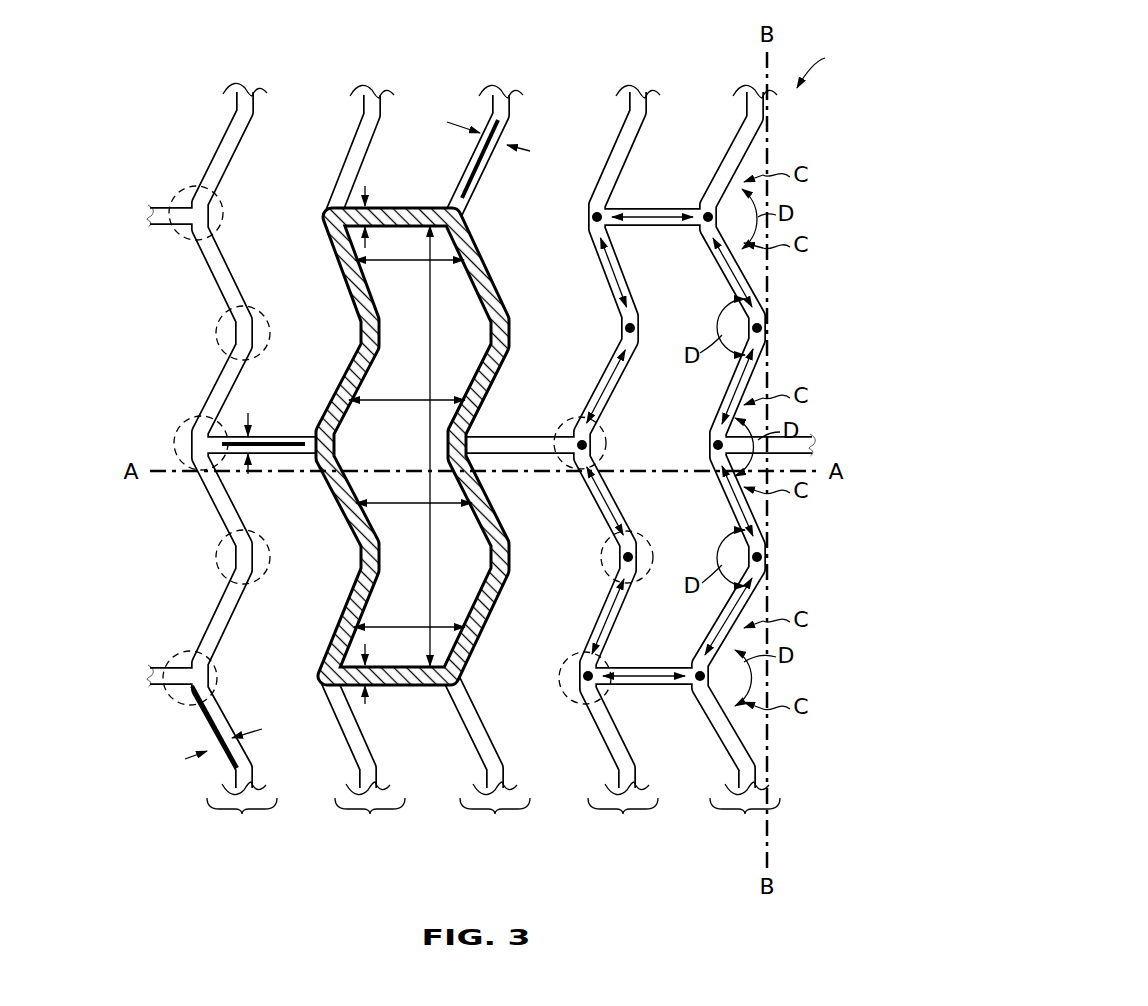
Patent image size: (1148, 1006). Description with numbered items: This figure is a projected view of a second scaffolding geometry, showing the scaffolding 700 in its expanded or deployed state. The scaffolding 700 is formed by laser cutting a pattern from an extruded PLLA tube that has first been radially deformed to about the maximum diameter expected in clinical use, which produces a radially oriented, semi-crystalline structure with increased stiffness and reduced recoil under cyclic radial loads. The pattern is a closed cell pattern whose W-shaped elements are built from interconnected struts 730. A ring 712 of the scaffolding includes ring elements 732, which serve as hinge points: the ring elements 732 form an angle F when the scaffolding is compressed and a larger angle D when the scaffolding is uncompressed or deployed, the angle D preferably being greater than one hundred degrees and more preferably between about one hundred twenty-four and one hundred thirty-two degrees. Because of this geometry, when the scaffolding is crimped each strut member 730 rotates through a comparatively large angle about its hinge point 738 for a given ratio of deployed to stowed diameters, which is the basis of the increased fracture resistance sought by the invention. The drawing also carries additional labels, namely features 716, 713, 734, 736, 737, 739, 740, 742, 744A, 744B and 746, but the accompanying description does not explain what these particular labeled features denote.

The scaffolding 700 is at (839, 72).
The stent segment 716 is at (861, 45).
The ring 712 is at (493, 820).
The strut width 713 is at (266, 437).
The struts 730 is at (237, 150).
The ring elements 732 is at (200, 246).
The connecting links 734 is at (392, 207).
The cells 736 is at (485, 235).
The link width 737 is at (358, 446).
The hinge point 738 is at (703, 227).
The bends 739 is at (325, 204).
The strut segments 740 is at (600, 263).
The connector 742 is at (649, 213).
The cell width 744A is at (392, 262).
The cell width 744B is at (415, 498).
The cell length 746 is at (431, 327).